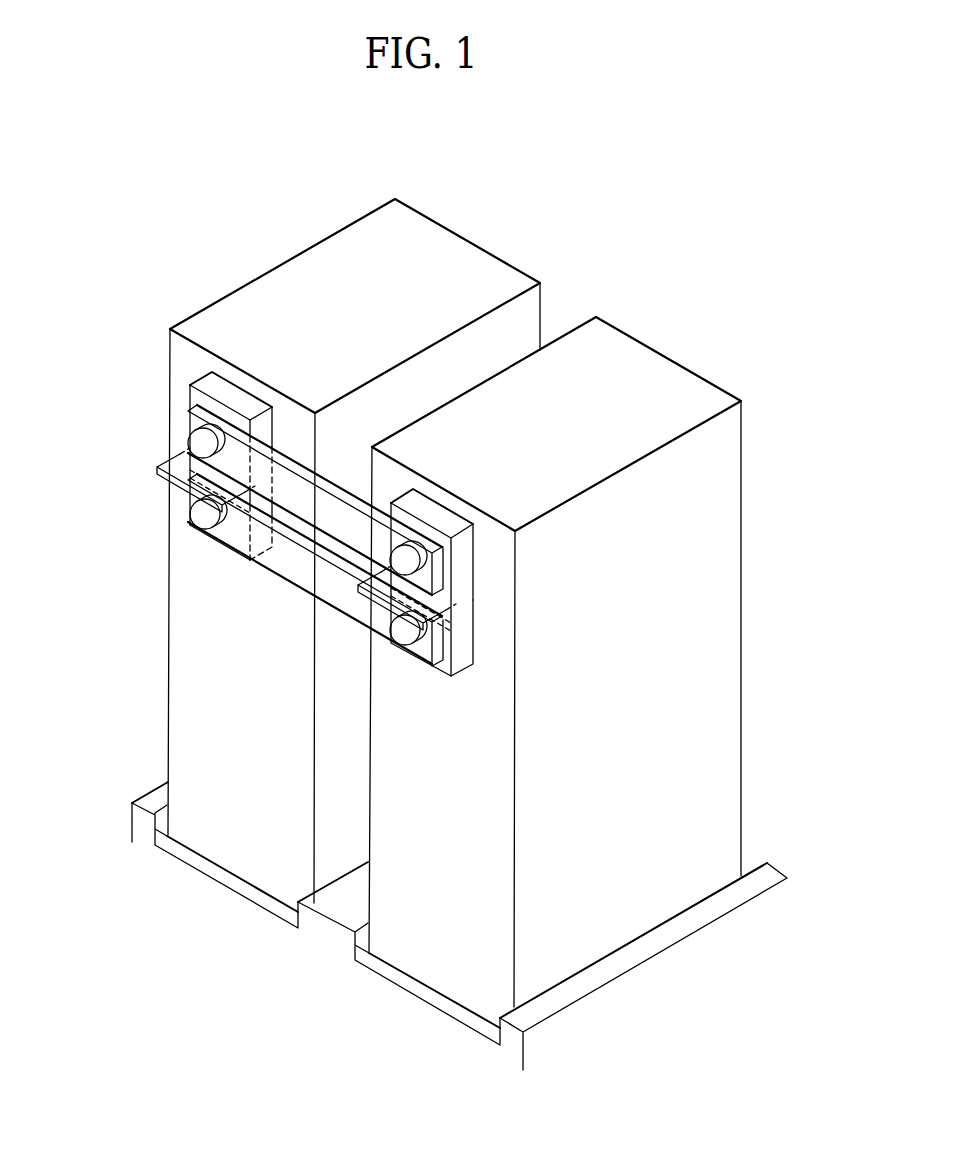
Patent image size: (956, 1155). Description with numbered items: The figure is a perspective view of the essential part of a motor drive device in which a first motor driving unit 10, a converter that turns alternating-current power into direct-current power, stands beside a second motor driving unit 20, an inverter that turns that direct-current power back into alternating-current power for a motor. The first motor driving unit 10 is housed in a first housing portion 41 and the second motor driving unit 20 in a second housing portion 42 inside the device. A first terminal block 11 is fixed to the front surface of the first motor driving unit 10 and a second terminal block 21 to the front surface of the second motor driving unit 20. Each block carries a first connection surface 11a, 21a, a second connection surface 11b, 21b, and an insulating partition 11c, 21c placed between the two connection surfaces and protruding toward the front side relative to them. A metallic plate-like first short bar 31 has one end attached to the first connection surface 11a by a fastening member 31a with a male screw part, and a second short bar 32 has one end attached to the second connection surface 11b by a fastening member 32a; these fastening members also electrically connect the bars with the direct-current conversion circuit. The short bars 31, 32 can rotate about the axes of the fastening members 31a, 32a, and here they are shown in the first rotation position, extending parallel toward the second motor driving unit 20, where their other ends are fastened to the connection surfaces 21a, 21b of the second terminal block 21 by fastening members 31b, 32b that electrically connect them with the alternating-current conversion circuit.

The first motor driving unit 10 is at (452, 226).
The second motor driving unit 20 is at (660, 356).
The first terminal block 11 is at (218, 383).
The first connection surface 11a is at (218, 410).
The second connection surface 11b is at (220, 545).
The partition 11c is at (180, 490).
The second terminal block 21 is at (475, 620).
The first connection surface 21a is at (450, 530).
The second connection surface 21b is at (436, 672).
The partition 21c is at (365, 596).
The first short bar 31 is at (340, 510).
The second short bar 32 is at (290, 566).
The fastening member 31a is at (200, 442).
The fastening member 31b is at (410, 562).
The fastening member 32a is at (200, 513).
The fastening member 32b is at (405, 640).
The first housing portion 41 is at (230, 878).
The second housing portion 42 is at (420, 990).